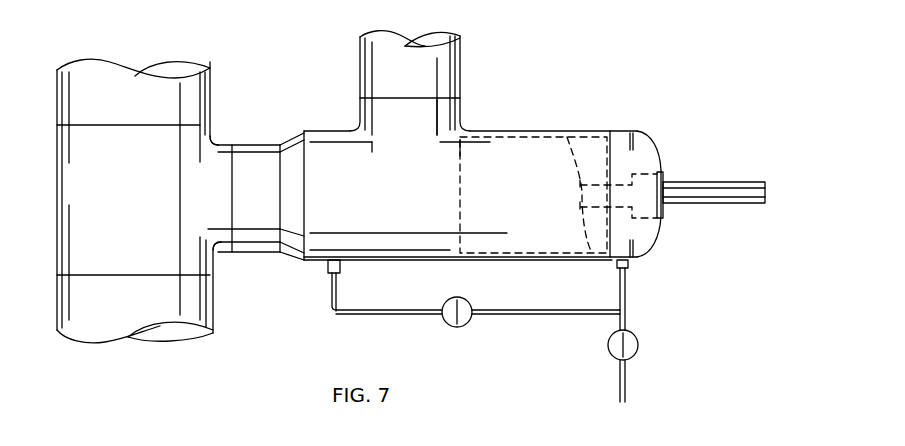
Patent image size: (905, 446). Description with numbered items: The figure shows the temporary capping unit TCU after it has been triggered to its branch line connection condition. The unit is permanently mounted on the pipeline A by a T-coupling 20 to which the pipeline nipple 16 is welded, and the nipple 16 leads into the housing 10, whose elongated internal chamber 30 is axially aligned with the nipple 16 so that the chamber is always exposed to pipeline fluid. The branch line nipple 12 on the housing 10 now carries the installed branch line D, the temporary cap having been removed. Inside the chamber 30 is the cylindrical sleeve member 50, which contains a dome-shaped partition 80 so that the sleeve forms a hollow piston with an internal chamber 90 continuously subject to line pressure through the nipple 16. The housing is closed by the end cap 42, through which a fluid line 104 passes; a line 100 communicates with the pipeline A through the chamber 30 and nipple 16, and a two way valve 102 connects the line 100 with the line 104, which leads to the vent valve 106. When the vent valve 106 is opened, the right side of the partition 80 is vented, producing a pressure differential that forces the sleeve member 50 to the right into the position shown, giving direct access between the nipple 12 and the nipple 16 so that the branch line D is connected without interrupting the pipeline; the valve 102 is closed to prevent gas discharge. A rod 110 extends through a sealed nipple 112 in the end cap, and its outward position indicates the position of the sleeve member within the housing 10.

The pipeline A is at (214, 78).
The T-coupling 20 is at (204, 146).
The pipeline nipple 16 is at (258, 148).
The internal chamber 30 is at (351, 154).
The housing 10 is at (604, 130).
The branch line D is at (460, 57).
The branch line nipple 12 is at (460, 113).
The temporary capping unit TCU is at (540, 130).
The end cap 42 is at (646, 146).
The internal chamber 90 is at (460, 185).
The sleeve member 50 is at (566, 142).
The dome-shaped partition 80 is at (585, 231).
The rod 110 is at (714, 183).
The nipple 112 is at (665, 213).
The line 100 is at (428, 313).
The two way valve 102 is at (466, 326).
The fluid line 104 is at (627, 283).
The vent valve 106 is at (638, 345).